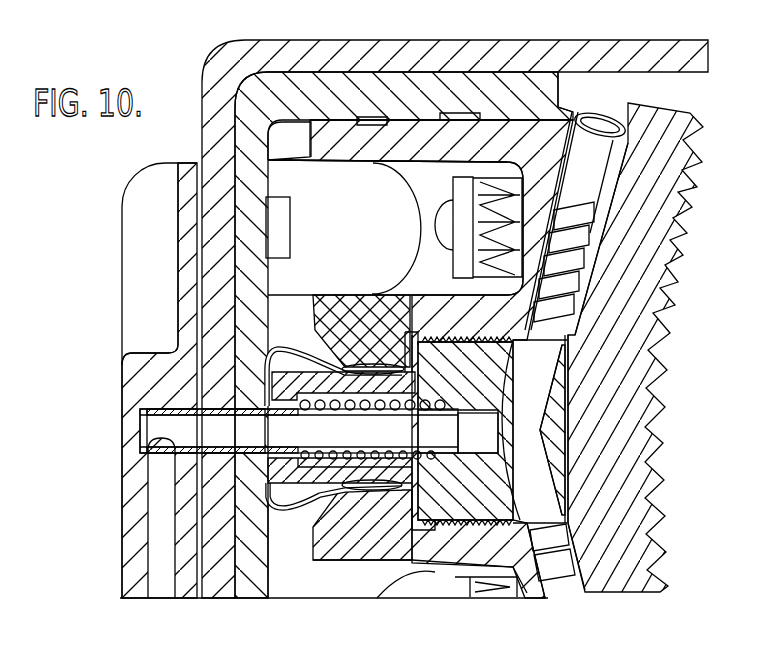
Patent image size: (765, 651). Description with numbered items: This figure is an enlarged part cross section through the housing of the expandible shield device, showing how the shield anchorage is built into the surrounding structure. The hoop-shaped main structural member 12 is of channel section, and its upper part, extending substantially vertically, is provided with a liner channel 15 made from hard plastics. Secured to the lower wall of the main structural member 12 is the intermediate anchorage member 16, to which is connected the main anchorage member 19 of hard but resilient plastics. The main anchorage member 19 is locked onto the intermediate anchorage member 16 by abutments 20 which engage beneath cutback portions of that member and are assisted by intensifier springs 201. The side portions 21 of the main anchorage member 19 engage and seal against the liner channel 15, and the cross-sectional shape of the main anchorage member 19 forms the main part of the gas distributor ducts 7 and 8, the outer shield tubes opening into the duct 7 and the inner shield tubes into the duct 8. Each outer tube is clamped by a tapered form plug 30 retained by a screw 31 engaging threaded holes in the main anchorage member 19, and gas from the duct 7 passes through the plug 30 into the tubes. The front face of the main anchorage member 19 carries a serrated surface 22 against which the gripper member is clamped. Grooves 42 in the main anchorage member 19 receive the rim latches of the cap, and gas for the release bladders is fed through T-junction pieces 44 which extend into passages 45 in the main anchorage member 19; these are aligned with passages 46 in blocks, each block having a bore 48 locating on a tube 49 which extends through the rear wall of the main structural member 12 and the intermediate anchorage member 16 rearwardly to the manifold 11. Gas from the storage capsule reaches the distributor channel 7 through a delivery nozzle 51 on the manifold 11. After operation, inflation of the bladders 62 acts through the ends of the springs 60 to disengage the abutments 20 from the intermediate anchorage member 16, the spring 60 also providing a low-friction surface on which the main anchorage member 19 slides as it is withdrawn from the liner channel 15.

The main structural member 12 is at (233, 52).
The liner channel 15 is at (262, 94).
The grooves 42 is at (613, 100).
The intensifier springs 201 is at (337, 160).
The side portions 21 is at (393, 133).
The tapered form plug 30 is at (458, 184).
The screw 31 is at (437, 217).
The gas distributor duct 7 is at (361, 245).
The delivery nozzle 51 is at (288, 214).
The T-junction pieces 44 is at (548, 600).
The passages 45 is at (563, 247).
The manifold 11 is at (148, 360).
The main anchorage member 19 is at (428, 312).
The abutments 20 is at (392, 348).
The spring 60 is at (294, 346).
The intermediate anchorage member 16 is at (280, 364).
The passages 46 is at (533, 373).
The serrated surface 22 is at (655, 430).
The tube 49 is at (360, 442).
The bladders 62 is at (390, 377).
The bore 48 is at (490, 442).
The gas distributor duct 8 is at (311, 594).